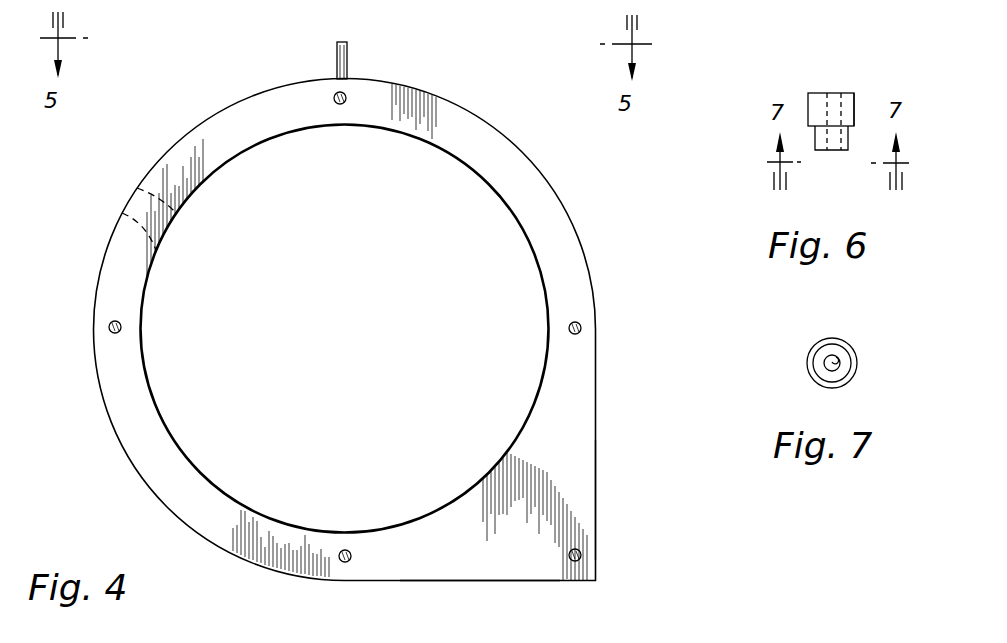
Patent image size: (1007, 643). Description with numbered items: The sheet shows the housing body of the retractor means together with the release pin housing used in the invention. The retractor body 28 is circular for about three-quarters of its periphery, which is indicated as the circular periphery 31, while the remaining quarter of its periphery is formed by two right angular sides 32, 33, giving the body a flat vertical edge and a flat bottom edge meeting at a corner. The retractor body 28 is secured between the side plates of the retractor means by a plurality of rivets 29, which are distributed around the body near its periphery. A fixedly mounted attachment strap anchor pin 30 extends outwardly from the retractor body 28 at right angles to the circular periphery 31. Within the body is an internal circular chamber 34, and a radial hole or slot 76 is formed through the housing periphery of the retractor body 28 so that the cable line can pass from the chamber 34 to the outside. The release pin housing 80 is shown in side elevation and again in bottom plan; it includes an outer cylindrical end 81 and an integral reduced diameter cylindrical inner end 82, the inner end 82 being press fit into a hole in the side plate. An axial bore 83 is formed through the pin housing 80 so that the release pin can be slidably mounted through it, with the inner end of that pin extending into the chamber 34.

In FIG. 4, the retractor body 28 is at (218, 124).
In FIG. 4, the rivets 29 is at (347, 98).
In FIG. 4, the attachment strap anchor pin 30 is at (344, 52).
In FIG. 4, the circular periphery 31 is at (575, 217).
In FIG. 4, the right angular side 32 is at (596, 470).
In FIG. 4, the right angular side 33 is at (479, 583).
In FIG. 4, the internal circular chamber 34 is at (463, 163).
In FIG. 4, the radial hole or slot 76 is at (124, 200).
In FIG. 6, the release pin housing 80 is at (863, 102).
In FIG. 7, the release pin housing 80 is at (866, 357).
In FIG. 6, the outer cylindrical end 81 is at (846, 94).
In FIG. 7, the outer cylindrical end 81 is at (811, 375).
In FIG. 6, the reduced diameter cylindrical inner end 82 is at (850, 148).
In FIG. 7, the reduced diameter cylindrical inner end 82 is at (814, 358).
In FIG. 6, the axial bore 83 is at (829, 95).
In FIG. 7, the axial bore 83 is at (838, 358).